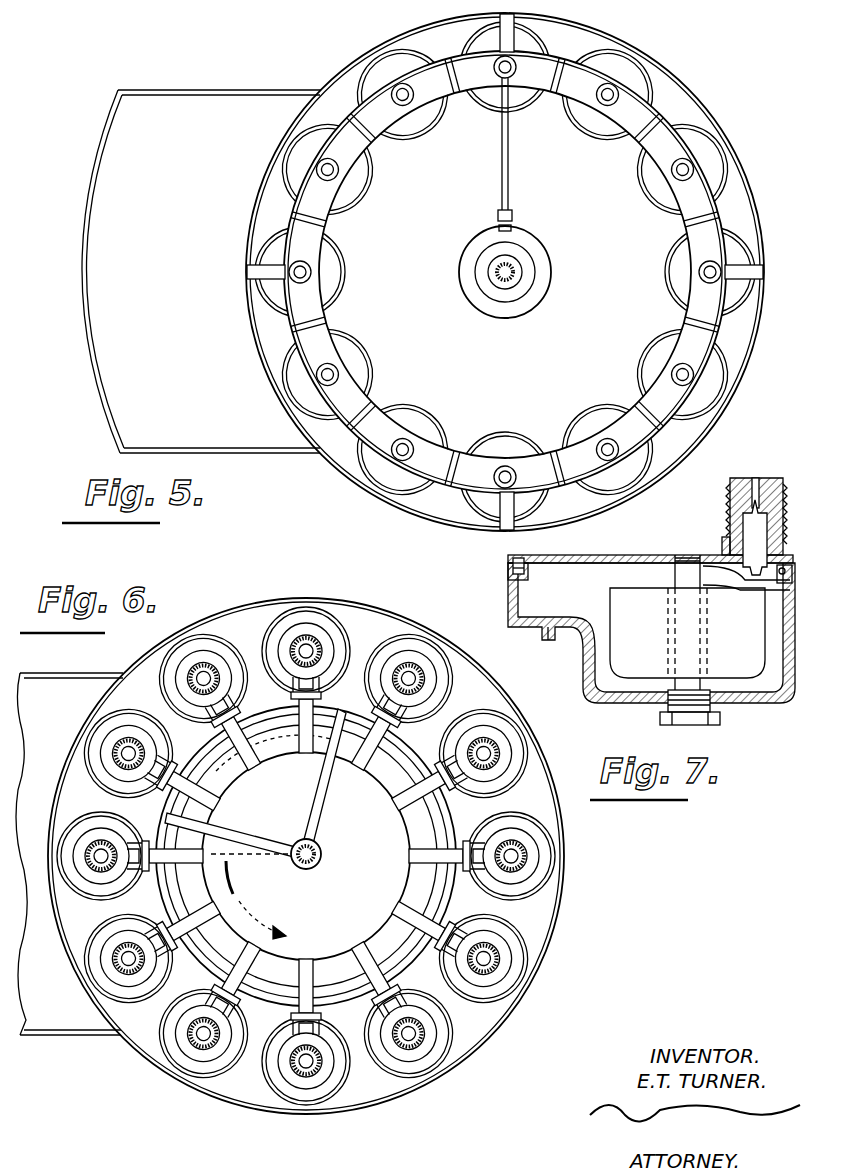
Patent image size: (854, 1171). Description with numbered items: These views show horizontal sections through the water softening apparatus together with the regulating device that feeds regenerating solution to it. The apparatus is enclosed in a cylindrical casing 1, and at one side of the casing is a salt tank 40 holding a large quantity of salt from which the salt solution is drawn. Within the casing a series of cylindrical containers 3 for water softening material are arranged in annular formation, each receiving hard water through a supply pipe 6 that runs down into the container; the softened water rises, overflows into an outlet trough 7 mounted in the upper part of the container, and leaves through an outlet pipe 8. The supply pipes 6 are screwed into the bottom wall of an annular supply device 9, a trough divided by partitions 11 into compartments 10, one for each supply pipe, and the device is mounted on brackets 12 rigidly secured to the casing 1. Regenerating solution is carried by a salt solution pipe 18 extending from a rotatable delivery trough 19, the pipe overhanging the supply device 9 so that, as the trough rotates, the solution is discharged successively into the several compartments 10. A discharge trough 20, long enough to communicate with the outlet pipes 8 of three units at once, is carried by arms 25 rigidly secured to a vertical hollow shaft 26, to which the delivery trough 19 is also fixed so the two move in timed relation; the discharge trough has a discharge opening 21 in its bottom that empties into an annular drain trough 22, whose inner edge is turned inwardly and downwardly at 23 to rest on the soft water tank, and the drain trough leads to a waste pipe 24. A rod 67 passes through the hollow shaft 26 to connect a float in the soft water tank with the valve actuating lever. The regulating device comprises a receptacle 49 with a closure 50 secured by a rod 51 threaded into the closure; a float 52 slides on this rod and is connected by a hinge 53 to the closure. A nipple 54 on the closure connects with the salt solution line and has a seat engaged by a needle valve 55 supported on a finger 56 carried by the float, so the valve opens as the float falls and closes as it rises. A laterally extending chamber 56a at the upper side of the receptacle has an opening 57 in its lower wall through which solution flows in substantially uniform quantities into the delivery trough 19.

In FIG. 5, the casing 1 is at (272, 152).
In FIG. 6, the casing 1 is at (562, 884).
In FIG. 5, the container 3 is at (494, 108).
In FIG. 6, the container 3 is at (219, 641).
In FIG. 5, the supply pipe 6 is at (516, 67).
In FIG. 6, the supply pipe 6 is at (301, 633).
In FIG. 6, the outlet trough 7 is at (229, 673).
In FIG. 6, the outlet pipe 8 is at (249, 746).
In FIG. 5, the annular supply device 9 is at (368, 138).
In FIG. 5, the compartment 10 is at (398, 97).
In FIG. 5, the partition 11 is at (455, 70).
In FIG. 5, the bracket 12 is at (500, 33).
In FIG. 5, the salt solution pipe 18 is at (509, 152).
In FIG. 5, the delivery trough 19 is at (540, 237).
In FIG. 6, the discharge trough 20 is at (263, 773).
In FIG. 6, the discharge opening 21 is at (246, 796).
In FIG. 6, the drain trough 22 is at (441, 887).
In FIG. 6, the inwardly and downwardly turned inner edge 23 is at (421, 827).
In FIG. 6, the waste pipe 24 is at (211, 853).
In FIG. 6, the arm 25 is at (323, 809).
In FIG. 5, the vertical hollow shaft 26 is at (502, 284).
In FIG. 6, the vertical hollow shaft 26 is at (323, 853).
In FIG. 5, the salt tank 40 is at (84, 255).
In FIG. 6, the salt tank 40 is at (60, 680).
In FIG. 7, the receptacle 49 is at (606, 708).
In FIG. 7, the closure 50 is at (645, 533).
In FIG. 7, the rod 51 is at (688, 577).
In FIG. 7, the float 52 is at (633, 617).
In FIG. 7, the hinge 53 is at (776, 580).
In FIG. 7, the nipple 54 is at (745, 490).
In FIG. 7, the needle valve 55 is at (748, 540).
In FIG. 7, the finger 56 is at (722, 555).
In FIG. 7, the laterally extending chamber 56a is at (530, 590).
In FIG. 7, the opening 57 is at (548, 641).
In FIG. 5, the rod 67 is at (514, 274).
In FIG. 6, the rod 67 is at (323, 869).